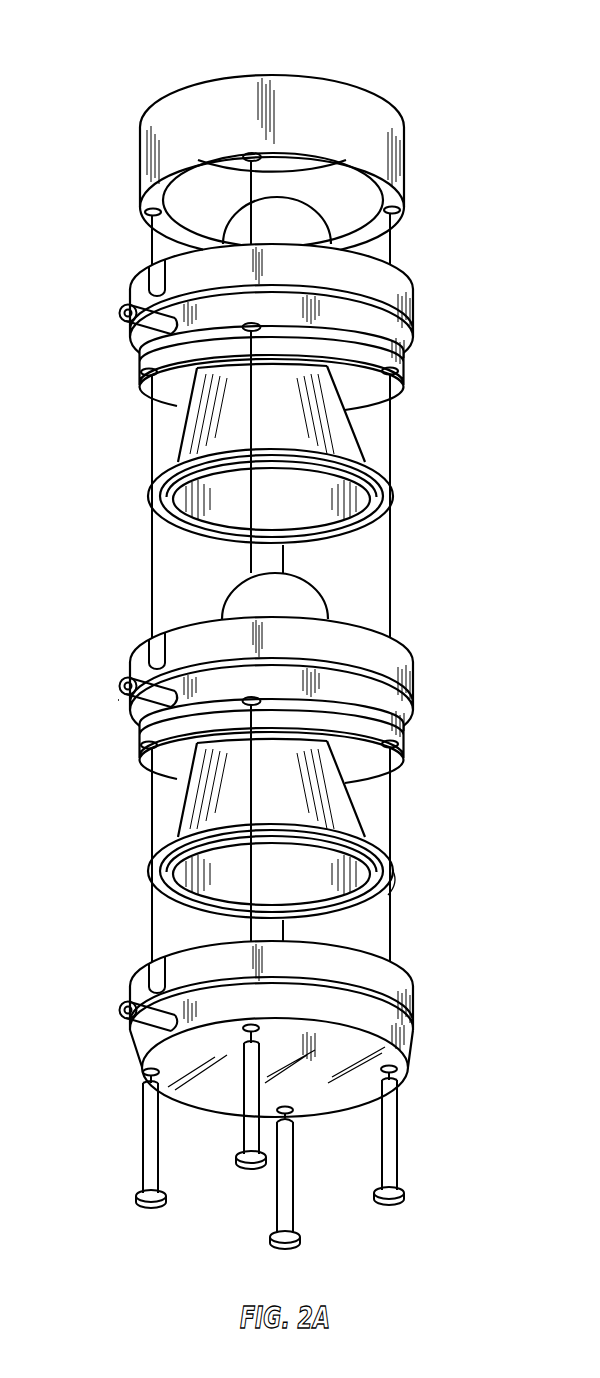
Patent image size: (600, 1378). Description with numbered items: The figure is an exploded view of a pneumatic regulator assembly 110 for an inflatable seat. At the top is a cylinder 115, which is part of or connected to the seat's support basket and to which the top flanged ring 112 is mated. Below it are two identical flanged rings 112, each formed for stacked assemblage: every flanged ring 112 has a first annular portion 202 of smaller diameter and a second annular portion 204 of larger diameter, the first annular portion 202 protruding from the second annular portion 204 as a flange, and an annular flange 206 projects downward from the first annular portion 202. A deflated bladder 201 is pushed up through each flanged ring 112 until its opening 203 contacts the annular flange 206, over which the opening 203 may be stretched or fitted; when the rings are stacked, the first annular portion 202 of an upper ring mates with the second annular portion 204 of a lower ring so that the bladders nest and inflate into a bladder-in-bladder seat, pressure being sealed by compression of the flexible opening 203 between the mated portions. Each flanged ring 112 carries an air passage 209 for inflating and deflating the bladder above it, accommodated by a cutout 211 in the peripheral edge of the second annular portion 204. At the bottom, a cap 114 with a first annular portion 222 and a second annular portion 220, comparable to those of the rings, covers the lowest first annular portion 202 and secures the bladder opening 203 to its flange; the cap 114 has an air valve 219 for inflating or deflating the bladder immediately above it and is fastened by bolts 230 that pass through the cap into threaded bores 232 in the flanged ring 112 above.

The pneumatic regulator assembly 110 is at (150, 38).
The cylinder 115 is at (140, 140).
The flanged ring 112 is at (415, 304).
The second annular portion 204 is at (130, 298).
The first annular portion 202 is at (146, 372).
The annular flange 206 is at (177, 396).
The bladder 201 is at (311, 590).
The cutout 211 is at (160, 645).
The air passage 209 is at (116, 700).
The threaded bore 232 is at (398, 757).
The opening 203 is at (391, 904).
The second annular portion 220 is at (399, 969).
The cap 114 is at (420, 1011).
The air valve 219 is at (135, 1022).
The first annular portion 222 is at (403, 1042).
The bolt 230 is at (393, 1152).